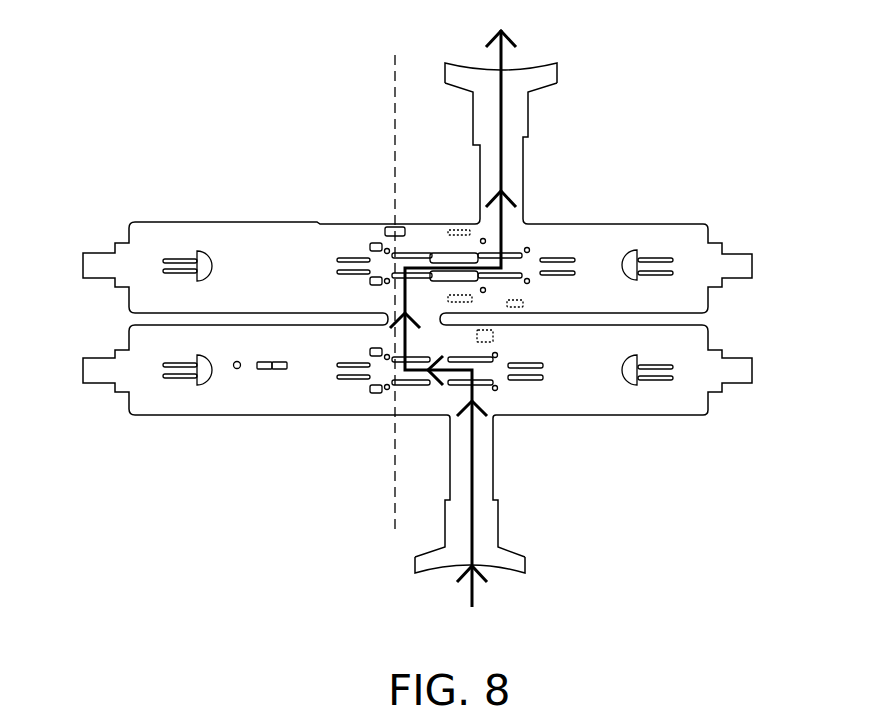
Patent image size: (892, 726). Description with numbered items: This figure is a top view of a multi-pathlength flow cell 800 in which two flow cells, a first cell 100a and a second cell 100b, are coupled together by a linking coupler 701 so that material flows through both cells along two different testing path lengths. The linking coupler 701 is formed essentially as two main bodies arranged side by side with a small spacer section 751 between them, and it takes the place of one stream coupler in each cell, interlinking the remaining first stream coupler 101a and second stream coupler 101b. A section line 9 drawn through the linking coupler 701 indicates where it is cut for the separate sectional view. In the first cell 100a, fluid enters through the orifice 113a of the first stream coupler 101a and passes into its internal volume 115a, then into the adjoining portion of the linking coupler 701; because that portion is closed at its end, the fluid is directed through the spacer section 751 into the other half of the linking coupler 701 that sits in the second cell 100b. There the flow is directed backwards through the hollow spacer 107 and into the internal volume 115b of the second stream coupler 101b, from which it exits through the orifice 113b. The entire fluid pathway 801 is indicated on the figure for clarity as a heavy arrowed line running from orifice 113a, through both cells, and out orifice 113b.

The multi-pathlength flow cell 800 is at (705, 130).
The section line 9- 9 is at (385, 63).
The first cell 100a is at (708, 416).
The second cell 100b is at (708, 222).
The first stream coupler 101a is at (502, 502).
The second stream coupler 101b is at (528, 112).
The orifice of first stream coupler 113a is at (503, 571).
The orifice of second stream coupler 113b is at (533, 64).
The internal volume of first stream coupler 115a is at (513, 418).
The internal volume of second stream coupler 115b is at (562, 223).
The hollow spacer 107 is at (443, 222).
The linking coupler 701 is at (415, 418).
The spacer section 751 is at (443, 318).
The fluid pathway 801 is at (477, 592).